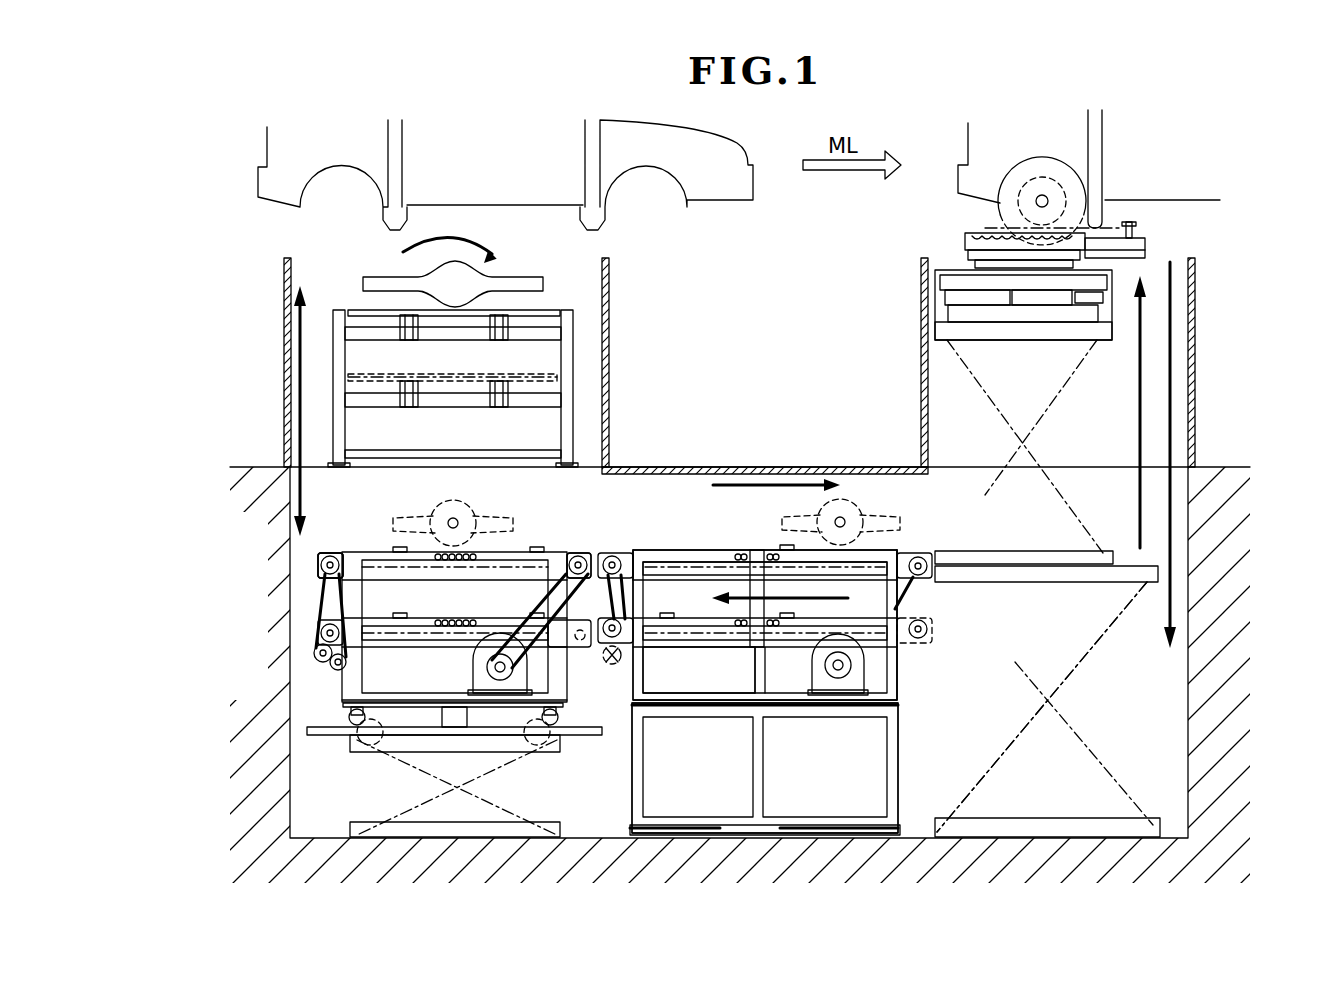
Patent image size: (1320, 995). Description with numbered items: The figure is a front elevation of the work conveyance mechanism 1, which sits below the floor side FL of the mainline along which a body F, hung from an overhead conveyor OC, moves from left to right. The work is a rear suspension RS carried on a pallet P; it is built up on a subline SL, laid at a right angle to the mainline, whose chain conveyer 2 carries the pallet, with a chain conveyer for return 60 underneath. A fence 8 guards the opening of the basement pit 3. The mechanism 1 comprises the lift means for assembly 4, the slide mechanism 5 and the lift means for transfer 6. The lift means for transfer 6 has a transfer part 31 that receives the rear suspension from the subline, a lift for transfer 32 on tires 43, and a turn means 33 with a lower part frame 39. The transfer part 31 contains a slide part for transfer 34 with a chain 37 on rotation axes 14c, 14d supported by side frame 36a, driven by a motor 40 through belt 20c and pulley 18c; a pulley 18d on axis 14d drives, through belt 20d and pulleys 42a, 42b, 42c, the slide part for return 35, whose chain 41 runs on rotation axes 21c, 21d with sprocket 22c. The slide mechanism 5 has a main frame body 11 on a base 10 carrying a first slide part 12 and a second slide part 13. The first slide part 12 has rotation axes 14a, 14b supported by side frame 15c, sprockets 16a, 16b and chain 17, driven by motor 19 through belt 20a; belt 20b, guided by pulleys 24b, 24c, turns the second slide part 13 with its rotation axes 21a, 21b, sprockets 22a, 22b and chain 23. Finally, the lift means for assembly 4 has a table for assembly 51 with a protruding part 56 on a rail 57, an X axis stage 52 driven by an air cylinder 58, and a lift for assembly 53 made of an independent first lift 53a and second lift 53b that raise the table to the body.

The work conveyance mechanism 1 is at (702, 485).
The chain conveyer 2 is at (409, 340).
The basement pit 3 is at (1165, 765).
The lift means for assembly 4 is at (988, 740).
The slide mechanism 5 is at (916, 763).
The lift means for transfer 6 is at (578, 800).
The fence 8 is at (285, 405).
The base 10 is at (893, 806).
The main frame body 11 is at (892, 660).
The first slide part 12 is at (702, 565).
The second slide part 13 is at (720, 636).
The rotation axis 14a is at (931, 553).
The rotation axis 14b is at (611, 557).
The rotation axis 14c is at (579, 557).
The rotation axis 14d is at (331, 558).
The side frame 15c is at (900, 553).
The sprocket 16a is at (940, 550).
The sprocket 16b is at (621, 546).
The chain 17 is at (757, 552).
The pulley 18c is at (567, 553).
The pulley 18d is at (348, 553).
The motor for driving of slide mechanism 19 is at (838, 680).
The belt 20a is at (918, 580).
The belt 20b is at (625, 580).
The belt 20c is at (541, 607).
The belt 20d is at (325, 582).
The rotation axis 21a is at (930, 637).
The rotation axis 21b is at (622, 633).
The rotation axis 21c is at (578, 647).
The rotation axis 21d is at (315, 637).
The sprocket 22a is at (935, 621).
The sprocket 22b is at (632, 618).
The sprocket 22c is at (600, 697).
The chain 23 is at (766, 648).
The pulley 24b is at (638, 716).
The pulley 24c is at (645, 676).
The transfer part 31 is at (317, 556).
The lift for transfer 32 is at (357, 803).
The turn means 33 is at (347, 717).
The slide part for transfer 34 is at (377, 552).
The slide part for return 35 is at (381, 618).
The side frame 36a is at (320, 605).
The chain 37 is at (462, 543).
The lower part frame 39 is at (404, 697).
The motor of transfer part for drive 40 is at (488, 662).
The chain 41 is at (458, 620).
The pulley 42a is at (316, 627).
The pulley 42b is at (313, 655).
The pulley 42c is at (330, 666).
The tire 43 is at (365, 745).
The table for assembly 51 is at (985, 243).
The X axis stage 52 is at (935, 283).
The lift for assembly 53 is at (1126, 381).
The first lift 53a is at (1100, 478).
The second lift 53b is at (1103, 712).
The protruding part 56 is at (1135, 228).
The rail 57 is at (1150, 252).
The air cylinder 58 is at (985, 292).
The chain conveyer for return 60 is at (409, 407).
The rear suspension RS is at (527, 283).
The pallet P is at (553, 312).
The subline SL is at (568, 374).
The body F is at (968, 146).
The overhead conveyor OC is at (1097, 152).
The floor side FL is at (740, 465).